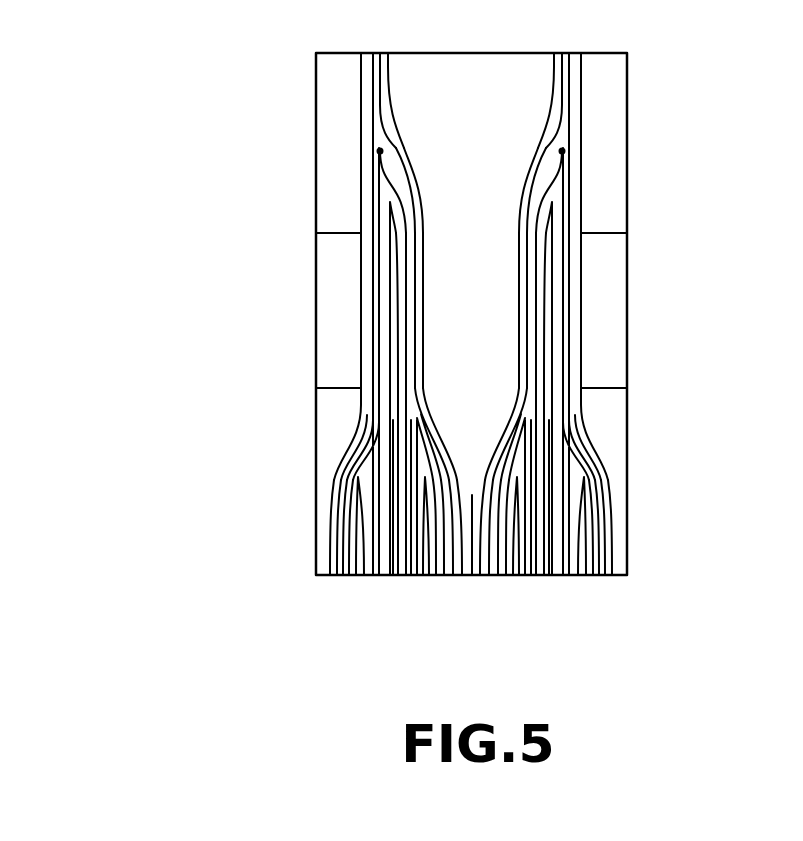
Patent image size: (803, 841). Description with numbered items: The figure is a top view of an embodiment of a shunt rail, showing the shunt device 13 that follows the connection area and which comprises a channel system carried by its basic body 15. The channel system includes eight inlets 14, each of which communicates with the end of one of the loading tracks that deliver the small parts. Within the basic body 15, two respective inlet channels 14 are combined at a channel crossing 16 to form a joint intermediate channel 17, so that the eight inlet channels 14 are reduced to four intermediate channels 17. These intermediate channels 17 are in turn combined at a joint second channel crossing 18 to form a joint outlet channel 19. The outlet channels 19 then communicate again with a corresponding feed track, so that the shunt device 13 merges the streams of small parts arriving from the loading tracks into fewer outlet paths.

The shunt device 13 is at (296, 190).
The inlet channels 14 is at (608, 578).
The basic body 15 is at (628, 190).
The channel crossing 16 is at (363, 418).
The intermediate channel 17 is at (364, 275).
The second channel crossing 18 is at (380, 150).
The outlet channel 19 is at (373, 80).